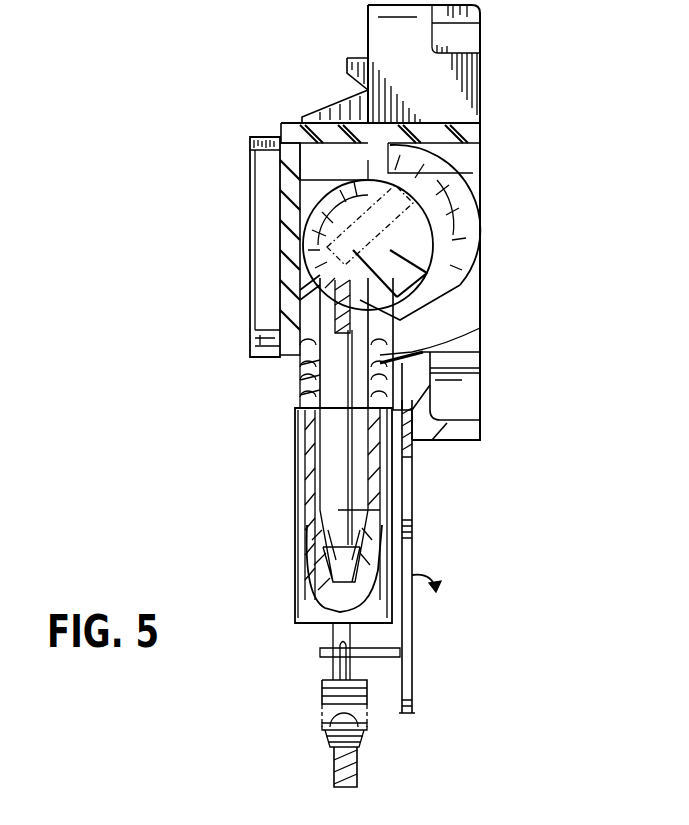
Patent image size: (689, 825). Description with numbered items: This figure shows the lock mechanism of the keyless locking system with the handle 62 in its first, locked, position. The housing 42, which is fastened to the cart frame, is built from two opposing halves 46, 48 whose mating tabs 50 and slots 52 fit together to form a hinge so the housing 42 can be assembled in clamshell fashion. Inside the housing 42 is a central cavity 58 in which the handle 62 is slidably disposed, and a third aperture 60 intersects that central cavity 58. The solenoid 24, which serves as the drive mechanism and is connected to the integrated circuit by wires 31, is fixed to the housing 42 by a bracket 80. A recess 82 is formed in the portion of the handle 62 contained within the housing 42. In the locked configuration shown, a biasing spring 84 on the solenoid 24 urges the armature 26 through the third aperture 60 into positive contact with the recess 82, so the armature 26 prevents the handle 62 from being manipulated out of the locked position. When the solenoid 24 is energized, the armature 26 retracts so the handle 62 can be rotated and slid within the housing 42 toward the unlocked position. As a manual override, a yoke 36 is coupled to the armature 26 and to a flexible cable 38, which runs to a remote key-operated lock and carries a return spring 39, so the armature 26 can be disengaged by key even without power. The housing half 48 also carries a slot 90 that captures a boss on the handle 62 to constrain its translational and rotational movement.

The solenoid 24 is at (294, 512).
The armature 26 is at (303, 380).
The wires 31 is at (432, 578).
The yoke 36 is at (348, 313).
The flexible cable 38 is at (358, 778).
The return spring 39 is at (322, 690).
The housing 42 is at (313, 106).
The housing half 46 is at (250, 233).
The housing half 48 is at (482, 162).
The mating tabs 50 is at (312, 112).
The slots 52 is at (358, 56).
The central cavity 58 is at (318, 190).
The third aperture 60 is at (382, 357).
The handle 62 is at (305, 287).
The bracket 80 is at (413, 503).
The recess 82 is at (292, 330).
The biasing spring 84 is at (306, 390).
The slot 90 is at (458, 256).